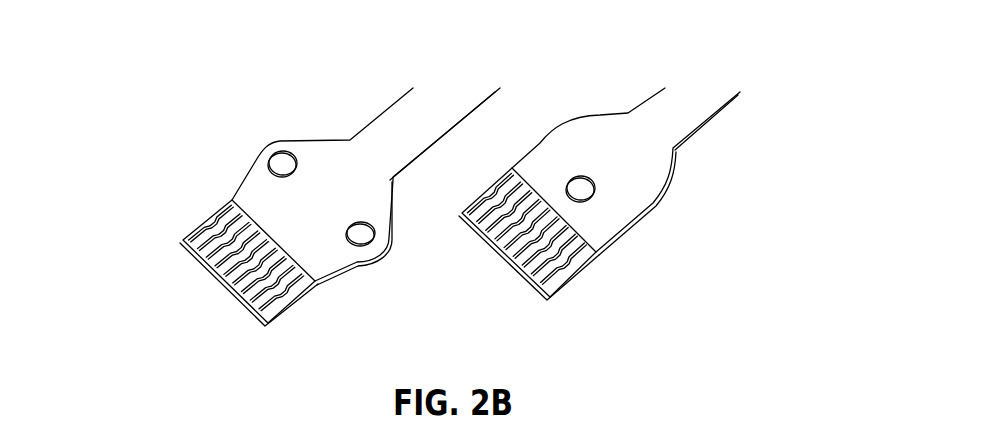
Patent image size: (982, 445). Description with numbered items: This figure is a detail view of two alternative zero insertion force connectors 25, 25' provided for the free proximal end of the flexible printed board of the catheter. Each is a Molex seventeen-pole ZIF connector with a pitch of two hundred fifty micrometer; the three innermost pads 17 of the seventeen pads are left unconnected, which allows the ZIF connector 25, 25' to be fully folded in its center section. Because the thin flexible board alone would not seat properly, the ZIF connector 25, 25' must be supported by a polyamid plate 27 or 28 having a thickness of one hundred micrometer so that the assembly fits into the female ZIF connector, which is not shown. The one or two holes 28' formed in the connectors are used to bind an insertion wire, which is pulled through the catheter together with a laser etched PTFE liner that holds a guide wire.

The inner most pads 17 is at (230, 255).
The ZIF connector 25 is at (662, 169).
The ZIF connector 25' is at (335, 183).
The polyamid plate 27 is at (293, 218).
The polyamid plate 28 is at (622, 169).
The holes 28' is at (543, 115).